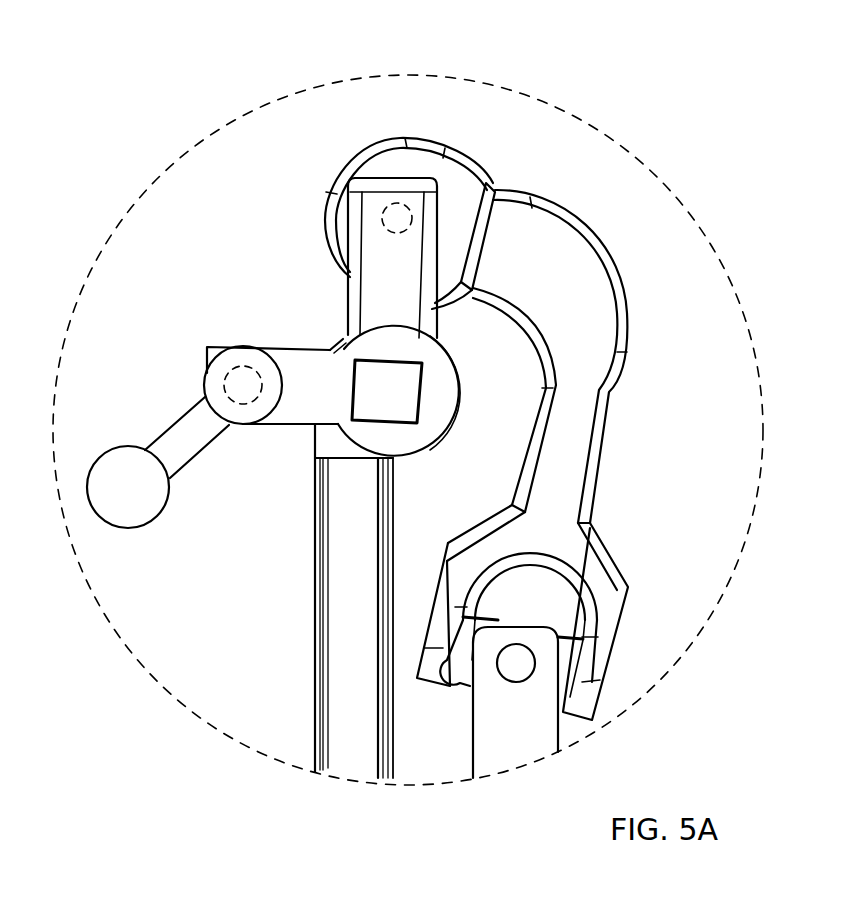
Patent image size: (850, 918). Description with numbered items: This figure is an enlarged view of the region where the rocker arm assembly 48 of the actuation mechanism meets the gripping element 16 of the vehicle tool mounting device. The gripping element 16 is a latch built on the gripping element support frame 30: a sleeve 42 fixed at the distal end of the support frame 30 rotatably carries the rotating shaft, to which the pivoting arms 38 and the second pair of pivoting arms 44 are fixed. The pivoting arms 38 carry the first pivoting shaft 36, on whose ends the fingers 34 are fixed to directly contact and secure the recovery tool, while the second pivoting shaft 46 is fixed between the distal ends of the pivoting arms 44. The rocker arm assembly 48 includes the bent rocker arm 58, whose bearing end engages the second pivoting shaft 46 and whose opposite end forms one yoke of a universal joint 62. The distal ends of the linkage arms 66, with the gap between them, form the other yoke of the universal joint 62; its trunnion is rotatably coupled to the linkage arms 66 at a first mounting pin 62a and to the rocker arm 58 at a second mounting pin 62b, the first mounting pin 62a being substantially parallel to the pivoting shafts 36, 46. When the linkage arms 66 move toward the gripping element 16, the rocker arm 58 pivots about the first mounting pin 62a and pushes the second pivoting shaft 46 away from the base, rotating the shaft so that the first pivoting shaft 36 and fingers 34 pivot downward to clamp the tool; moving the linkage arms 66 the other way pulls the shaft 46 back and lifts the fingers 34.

The gripping element 16 is at (635, 198).
The gripping element support frame 30 is at (322, 624).
The fingers 34 is at (173, 459).
The first pivoting shaft 36 is at (230, 372).
The pivoting arms 38 is at (318, 403).
The sleeve 42 is at (457, 370).
The second pair of pivoting arms 44 is at (378, 300).
The second pivoting shaft 46 is at (380, 224).
The rocker arm assembly 48 is at (718, 465).
The rocker arm 58 is at (606, 397).
The universal joint 62 is at (660, 628).
The first mounting pin 62a is at (511, 668).
The second mounting pin 62b is at (464, 660).
The linkage arms 66 is at (510, 732).